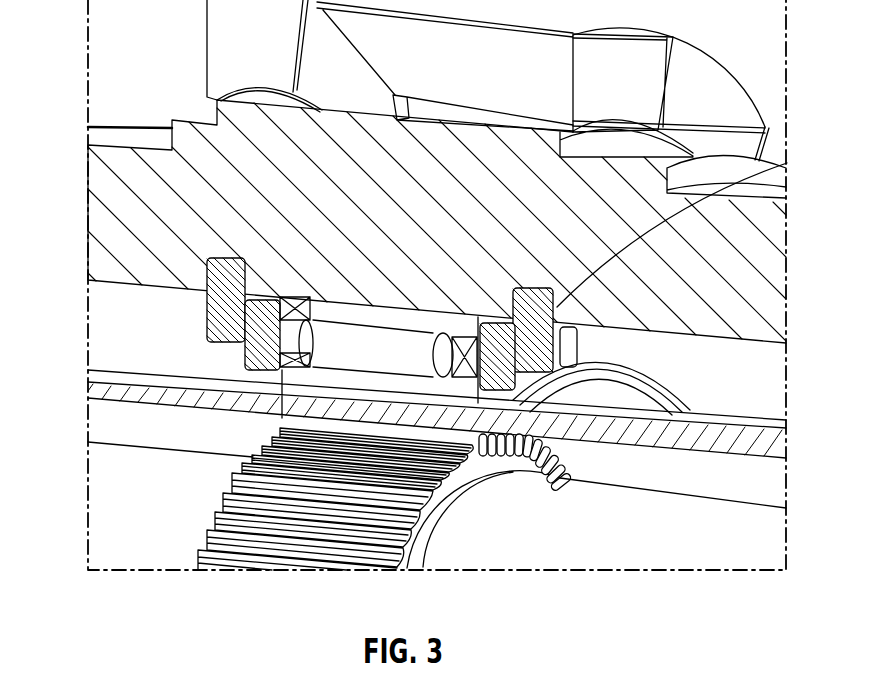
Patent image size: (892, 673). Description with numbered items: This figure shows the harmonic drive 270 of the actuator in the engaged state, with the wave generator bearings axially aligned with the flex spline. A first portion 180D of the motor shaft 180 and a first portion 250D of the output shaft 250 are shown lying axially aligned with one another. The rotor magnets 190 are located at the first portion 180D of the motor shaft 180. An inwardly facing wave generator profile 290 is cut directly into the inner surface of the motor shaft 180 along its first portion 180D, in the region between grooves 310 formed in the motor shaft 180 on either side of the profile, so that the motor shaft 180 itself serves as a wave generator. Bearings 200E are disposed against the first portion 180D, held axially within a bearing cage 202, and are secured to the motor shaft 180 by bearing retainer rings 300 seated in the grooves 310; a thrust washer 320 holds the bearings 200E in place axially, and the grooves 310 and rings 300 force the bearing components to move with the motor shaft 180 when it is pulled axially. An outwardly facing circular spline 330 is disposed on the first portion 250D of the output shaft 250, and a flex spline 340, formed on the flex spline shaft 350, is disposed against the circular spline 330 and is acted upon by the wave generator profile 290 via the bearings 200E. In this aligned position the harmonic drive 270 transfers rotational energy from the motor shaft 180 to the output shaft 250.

The motor shaft 180 is at (104, 186).
The first portion of the motor shaft 180D is at (277, 135).
The rotor magnets 190 is at (765, 127).
The bearings 200E is at (283, 408).
The bearing cage 202 is at (537, 277).
The output shaft 250 is at (772, 545).
The first portion of the output shaft 250D is at (253, 572).
The harmonic drive 270 is at (457, 313).
The wave generator profile 290 is at (405, 112).
The bearing retainer rings 300 is at (787, 163).
The grooves 310 is at (483, 265).
The thrust washer 320 is at (583, 333).
The circular spline 330 is at (357, 568).
The flex spline 340 is at (560, 455).
The flex spline shaft 350 is at (138, 428).